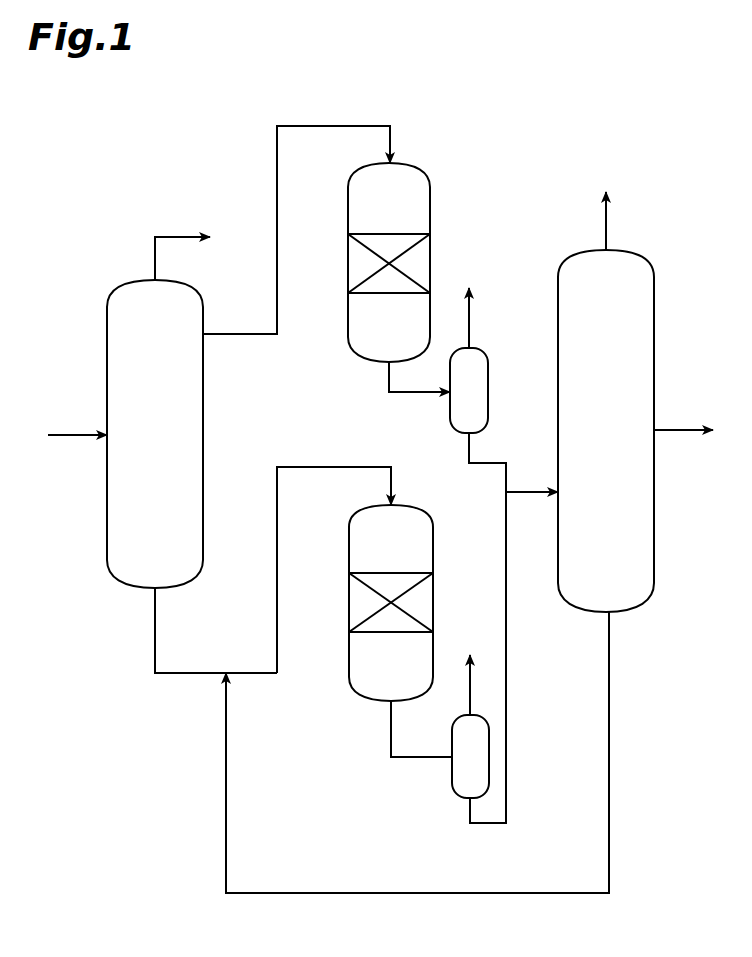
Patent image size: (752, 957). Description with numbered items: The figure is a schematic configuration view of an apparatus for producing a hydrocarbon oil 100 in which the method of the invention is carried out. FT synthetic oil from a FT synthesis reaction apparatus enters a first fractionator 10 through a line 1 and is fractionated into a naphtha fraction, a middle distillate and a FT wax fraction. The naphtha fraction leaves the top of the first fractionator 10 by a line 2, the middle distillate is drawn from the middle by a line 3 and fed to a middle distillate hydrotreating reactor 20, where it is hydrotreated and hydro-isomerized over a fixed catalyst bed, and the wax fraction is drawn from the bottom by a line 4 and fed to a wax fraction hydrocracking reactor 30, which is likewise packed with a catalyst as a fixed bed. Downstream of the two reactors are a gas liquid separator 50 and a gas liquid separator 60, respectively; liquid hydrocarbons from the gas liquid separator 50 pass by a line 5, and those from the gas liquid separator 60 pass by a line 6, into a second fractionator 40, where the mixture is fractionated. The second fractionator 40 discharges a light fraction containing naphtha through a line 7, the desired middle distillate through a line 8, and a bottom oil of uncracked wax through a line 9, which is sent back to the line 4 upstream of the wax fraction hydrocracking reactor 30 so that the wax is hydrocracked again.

The apparatus for producing a hydrocarbon oil 100 is at (591, 71).
The first fractionator 10 is at (116, 291).
The middle distillate hydrotreating reactor 20 is at (349, 179).
The wax fraction hydrocracking reactor 30 is at (433, 555).
The second fractionator 40 is at (566, 262).
The gas liquid separator 50 is at (476, 347).
The gas liquid separator 60 is at (461, 800).
The line 1 is at (73, 437).
The line 2 is at (187, 236).
The line 3 is at (226, 336).
The line 4 is at (335, 465).
The line 5 is at (488, 466).
The line 6 is at (508, 706).
The line 7 is at (608, 222).
The line 8 is at (690, 428).
The line 9 is at (611, 705).